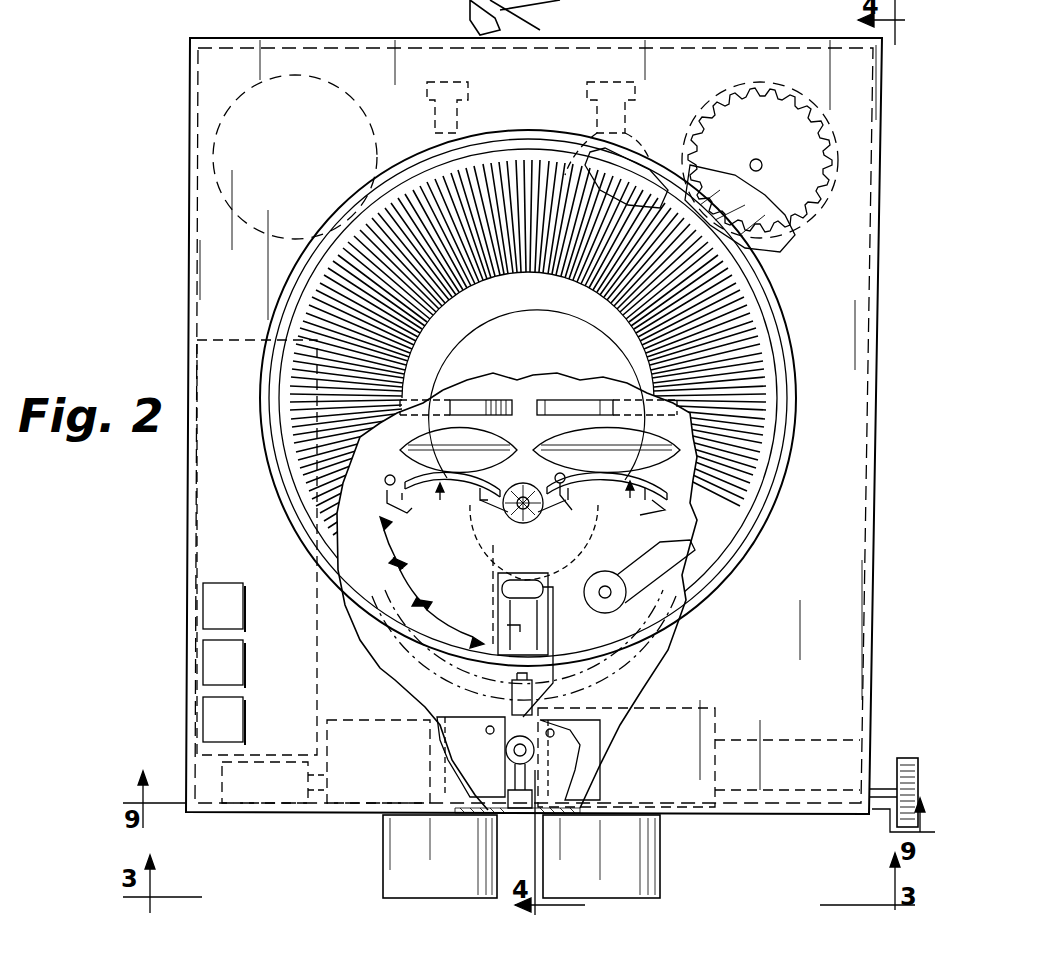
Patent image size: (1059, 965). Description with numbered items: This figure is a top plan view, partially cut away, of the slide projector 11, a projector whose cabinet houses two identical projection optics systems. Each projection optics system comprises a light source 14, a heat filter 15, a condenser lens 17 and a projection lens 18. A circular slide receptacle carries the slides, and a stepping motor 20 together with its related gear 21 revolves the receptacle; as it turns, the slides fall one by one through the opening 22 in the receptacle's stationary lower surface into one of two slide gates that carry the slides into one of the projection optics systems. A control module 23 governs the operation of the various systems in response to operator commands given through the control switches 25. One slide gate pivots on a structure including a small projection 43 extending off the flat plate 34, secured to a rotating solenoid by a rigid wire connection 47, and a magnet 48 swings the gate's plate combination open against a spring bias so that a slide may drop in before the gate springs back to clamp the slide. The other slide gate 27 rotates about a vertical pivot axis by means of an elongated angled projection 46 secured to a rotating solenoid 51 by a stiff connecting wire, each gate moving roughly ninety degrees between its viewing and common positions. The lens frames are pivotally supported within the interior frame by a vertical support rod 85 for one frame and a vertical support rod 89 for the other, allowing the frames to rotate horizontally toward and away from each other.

The slide projector 11 is at (150, 250).
The light source 14 is at (445, 118).
The heat filter 15 is at (470, 408).
The condenser lens 17 is at (480, 448).
The projection lens 18 is at (395, 855).
The stepping motor 20 is at (700, 100).
The gear 21 is at (798, 205).
The opening 22 is at (545, 568).
The control module 23 is at (218, 545).
The control switches 25 is at (440, 505).
The slide gate 27 is at (630, 500).
The flat plate 34 is at (685, 498).
The projection 43 is at (508, 520).
The elongated angled projection 46 is at (625, 577).
The rigid wire connection 47 is at (510, 485).
The magnet 48 is at (512, 695).
The rotating solenoid 51 is at (606, 613).
The vertical support rod 85 is at (488, 730).
The vertical support rod 89 is at (553, 735).